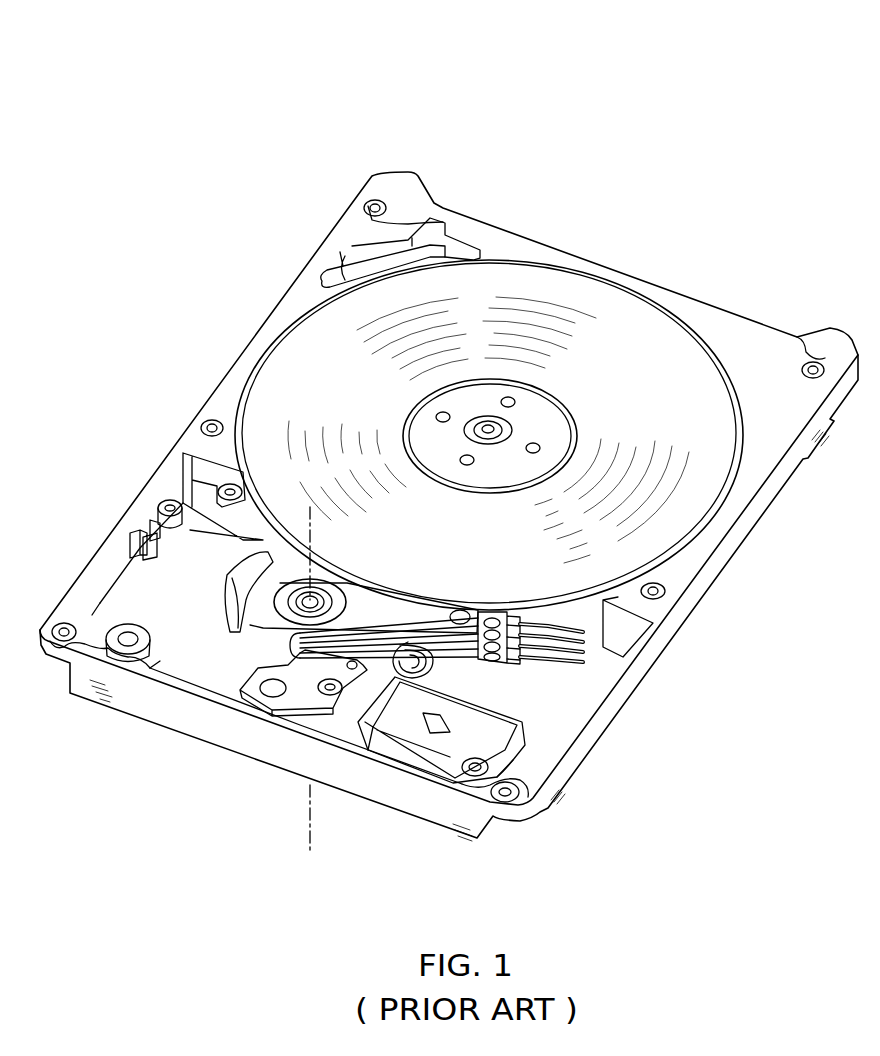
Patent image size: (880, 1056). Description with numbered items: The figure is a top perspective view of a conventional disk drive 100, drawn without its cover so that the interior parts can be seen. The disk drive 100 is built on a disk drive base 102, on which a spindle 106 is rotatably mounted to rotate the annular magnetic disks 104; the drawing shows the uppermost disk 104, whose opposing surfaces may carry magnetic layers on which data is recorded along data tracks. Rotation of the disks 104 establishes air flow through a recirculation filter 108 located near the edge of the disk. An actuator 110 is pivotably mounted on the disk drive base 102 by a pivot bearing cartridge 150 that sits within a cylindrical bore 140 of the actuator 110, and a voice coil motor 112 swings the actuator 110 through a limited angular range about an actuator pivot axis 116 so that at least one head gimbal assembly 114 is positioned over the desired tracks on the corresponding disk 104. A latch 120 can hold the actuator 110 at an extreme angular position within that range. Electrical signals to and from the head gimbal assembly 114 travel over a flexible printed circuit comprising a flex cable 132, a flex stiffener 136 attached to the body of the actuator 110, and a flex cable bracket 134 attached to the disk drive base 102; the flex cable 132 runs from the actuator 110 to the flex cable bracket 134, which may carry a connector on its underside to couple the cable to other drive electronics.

The disk drive 100 is at (645, 68).
The disk drive base 102 is at (753, 336).
The annular magnetic disk 104 is at (536, 294).
The spindle 106 is at (543, 427).
The recirculation filter 108 is at (358, 270).
The actuator 110 is at (430, 615).
The voice coil motor 112 is at (201, 630).
The head gimbal assembly 114 is at (533, 627).
The actuator pivot axis 116 is at (312, 815).
The latch 120 is at (158, 530).
The flex cable 132 is at (427, 662).
The flex cable bracket 134 is at (512, 731).
The flex stiffener 136 is at (300, 652).
The cylindrical bore 140 is at (300, 583).
The pivot bearing cartridge 150 is at (330, 600).